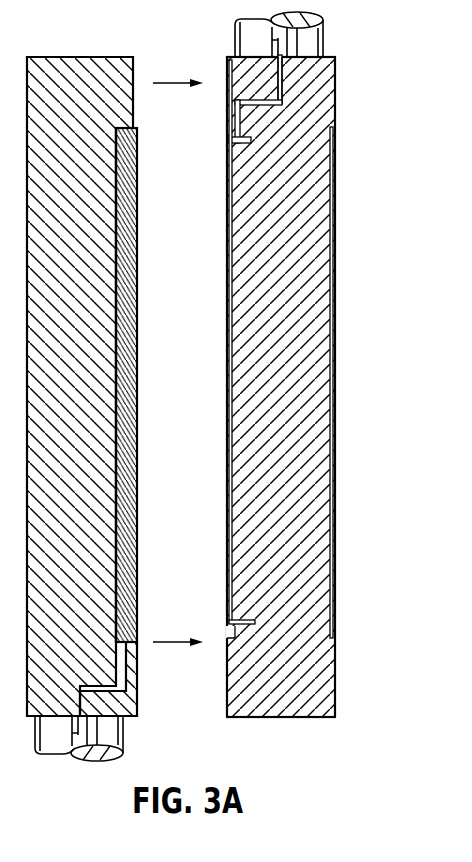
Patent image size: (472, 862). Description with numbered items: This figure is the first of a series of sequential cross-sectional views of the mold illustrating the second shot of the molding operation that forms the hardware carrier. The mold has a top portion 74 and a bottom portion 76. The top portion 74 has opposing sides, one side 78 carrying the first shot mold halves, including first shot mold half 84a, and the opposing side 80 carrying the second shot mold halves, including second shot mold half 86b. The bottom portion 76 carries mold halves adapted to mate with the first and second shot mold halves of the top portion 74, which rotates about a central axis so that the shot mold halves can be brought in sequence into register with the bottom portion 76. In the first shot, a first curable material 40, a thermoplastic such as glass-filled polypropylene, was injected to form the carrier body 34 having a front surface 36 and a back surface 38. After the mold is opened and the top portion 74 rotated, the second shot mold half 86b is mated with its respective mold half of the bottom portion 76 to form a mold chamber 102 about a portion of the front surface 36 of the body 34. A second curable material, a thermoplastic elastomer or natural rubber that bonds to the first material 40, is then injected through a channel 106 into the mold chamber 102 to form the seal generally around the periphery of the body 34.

The bottom portion 76 is at (45, 62).
The front surface 36 is at (137, 149).
The first curable material 40 is at (116, 172).
The back surface 38 is at (116, 342).
The body 34 is at (116, 608).
The opposing side 80 is at (228, 110).
The channel 106 is at (283, 79).
The side 78 is at (338, 107).
The first shot mold half 84a is at (331, 214).
The second shot mold half 86b is at (230, 588).
The mold chamber 102 is at (241, 623).
The top portion 74 is at (312, 718).